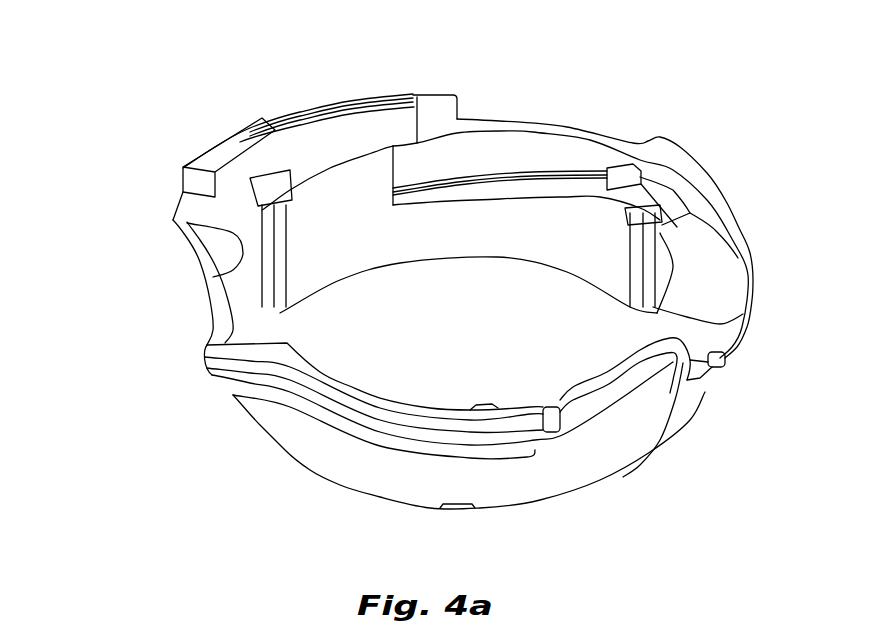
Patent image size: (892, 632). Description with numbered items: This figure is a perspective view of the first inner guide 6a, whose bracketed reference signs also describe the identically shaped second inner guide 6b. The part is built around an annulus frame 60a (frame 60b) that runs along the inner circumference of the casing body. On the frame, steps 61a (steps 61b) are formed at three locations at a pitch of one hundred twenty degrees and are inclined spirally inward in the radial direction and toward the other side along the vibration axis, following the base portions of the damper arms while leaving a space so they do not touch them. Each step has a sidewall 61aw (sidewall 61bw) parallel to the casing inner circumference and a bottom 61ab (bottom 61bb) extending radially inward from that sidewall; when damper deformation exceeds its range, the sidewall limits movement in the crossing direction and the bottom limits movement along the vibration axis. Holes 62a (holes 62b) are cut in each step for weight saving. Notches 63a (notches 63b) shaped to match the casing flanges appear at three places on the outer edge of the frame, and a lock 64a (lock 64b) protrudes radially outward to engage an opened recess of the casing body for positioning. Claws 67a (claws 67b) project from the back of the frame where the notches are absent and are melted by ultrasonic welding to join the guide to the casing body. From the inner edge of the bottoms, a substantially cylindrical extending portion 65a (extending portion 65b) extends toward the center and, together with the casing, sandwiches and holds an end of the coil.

The first inner guide 6a is at (395, 92).
The second inner guide 6b is at (423, 287).
The annulus frame 60a is at (287, 117).
The annulus frame 60b is at (298, 108).
The step 61a is at (772, 28).
The step 61b is at (423, 280).
The sidewall 61aw is at (205, 225).
The sidewall 61bw is at (423, 275).
The bottom 61ab is at (263, 145).
The bottom 61bb is at (426, 291).
The hole 62a is at (263, 195).
The hole 62b is at (463, 279).
The notch 63a is at (495, 118).
The notch 63b is at (402, 274).
The lock 64a is at (233, 133).
The lock 64b is at (185, 138).
The extending portion 65a is at (422, 260).
The extending portion 65b is at (468, 290).
The claw 67a is at (181, 242).
The claw 67b is at (451, 401).